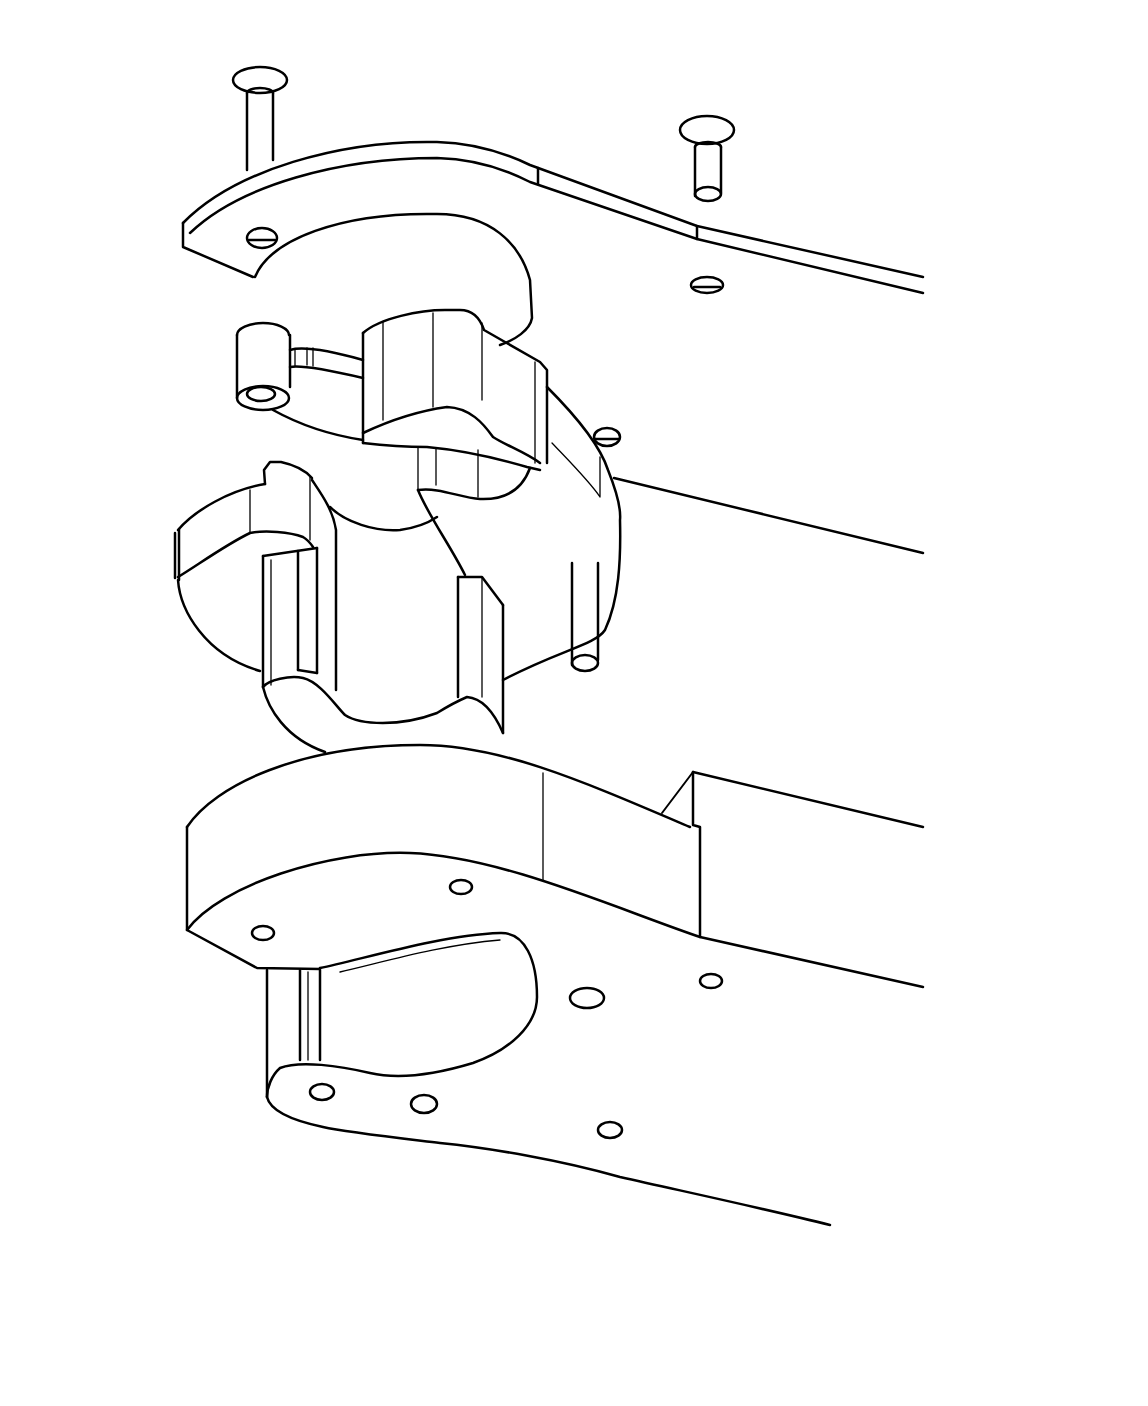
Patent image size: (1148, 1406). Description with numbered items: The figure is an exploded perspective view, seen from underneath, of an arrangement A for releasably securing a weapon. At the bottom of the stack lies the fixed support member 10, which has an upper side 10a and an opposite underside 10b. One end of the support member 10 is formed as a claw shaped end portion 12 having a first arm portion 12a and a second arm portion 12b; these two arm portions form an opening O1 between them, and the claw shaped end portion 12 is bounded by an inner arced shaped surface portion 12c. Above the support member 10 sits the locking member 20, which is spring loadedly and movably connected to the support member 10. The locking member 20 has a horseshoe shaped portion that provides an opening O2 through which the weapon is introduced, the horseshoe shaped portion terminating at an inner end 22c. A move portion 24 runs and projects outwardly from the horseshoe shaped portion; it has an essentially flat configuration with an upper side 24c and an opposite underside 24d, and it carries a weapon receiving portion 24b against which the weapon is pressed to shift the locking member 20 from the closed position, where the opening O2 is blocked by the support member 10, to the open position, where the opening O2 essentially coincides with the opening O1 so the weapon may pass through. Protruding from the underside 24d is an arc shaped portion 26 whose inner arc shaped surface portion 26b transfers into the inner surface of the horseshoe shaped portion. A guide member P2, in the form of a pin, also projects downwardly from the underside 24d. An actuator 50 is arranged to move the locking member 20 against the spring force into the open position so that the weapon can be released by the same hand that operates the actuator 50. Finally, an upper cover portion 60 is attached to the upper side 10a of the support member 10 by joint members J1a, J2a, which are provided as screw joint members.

The arrangement A is at (858, 44).
The upper cover portion 60 is at (565, 162).
The joint member J1a is at (282, 127).
The joint member J2a is at (735, 168).
The actuator 50 is at (475, 377).
The locking member 20 is at (492, 581).
The move portion 24 is at (630, 528).
The weapon receiving portion 24b is at (166, 547).
The upper side 24c is at (237, 492).
The underside 24d is at (215, 613).
The opening O2 is at (330, 480).
The inner end 22c is at (397, 547).
The arc shaped portion 26 is at (512, 698).
The inner arc shaped surface portion 26b is at (430, 653).
The guide member P2 is at (612, 640).
The fixed support member 10 is at (485, 977).
The upper side 10a is at (782, 790).
The underside 10b is at (567, 1058).
The claw shaped end portion 12 is at (197, 806).
The first arm portion 12a is at (174, 888).
The second arm portion 12b is at (260, 1027).
The inner arced shaped surface portion 12c is at (417, 1033).
The opening O1 is at (330, 992).